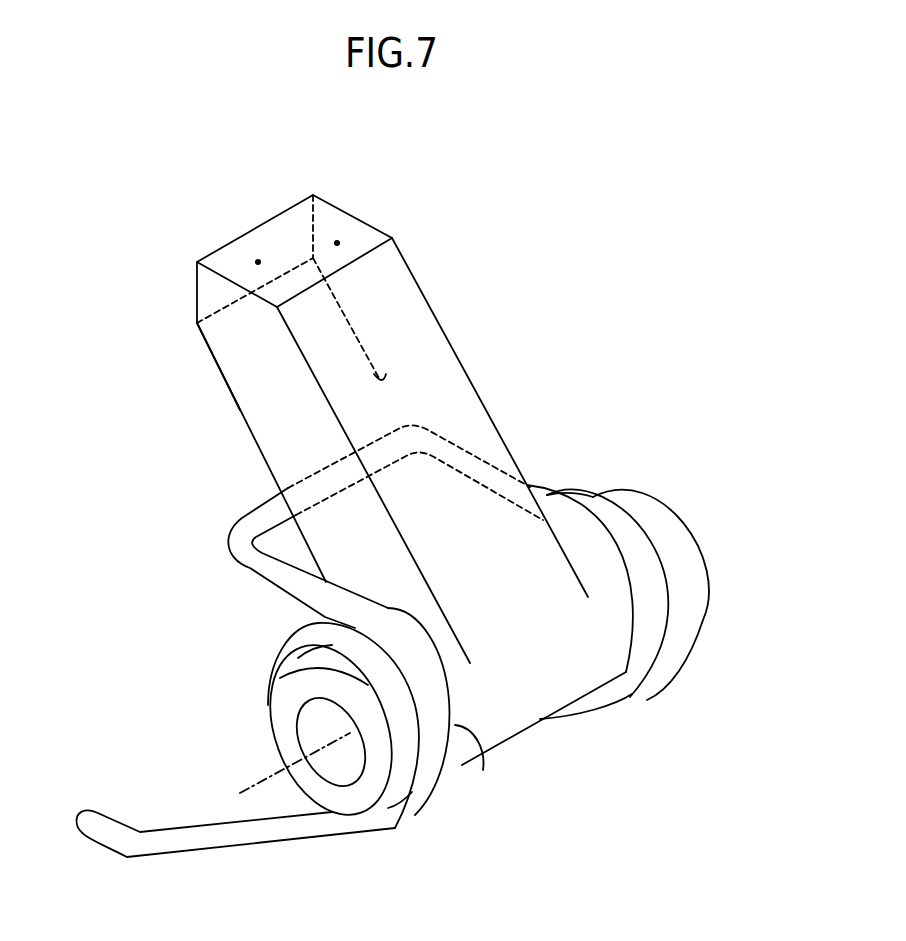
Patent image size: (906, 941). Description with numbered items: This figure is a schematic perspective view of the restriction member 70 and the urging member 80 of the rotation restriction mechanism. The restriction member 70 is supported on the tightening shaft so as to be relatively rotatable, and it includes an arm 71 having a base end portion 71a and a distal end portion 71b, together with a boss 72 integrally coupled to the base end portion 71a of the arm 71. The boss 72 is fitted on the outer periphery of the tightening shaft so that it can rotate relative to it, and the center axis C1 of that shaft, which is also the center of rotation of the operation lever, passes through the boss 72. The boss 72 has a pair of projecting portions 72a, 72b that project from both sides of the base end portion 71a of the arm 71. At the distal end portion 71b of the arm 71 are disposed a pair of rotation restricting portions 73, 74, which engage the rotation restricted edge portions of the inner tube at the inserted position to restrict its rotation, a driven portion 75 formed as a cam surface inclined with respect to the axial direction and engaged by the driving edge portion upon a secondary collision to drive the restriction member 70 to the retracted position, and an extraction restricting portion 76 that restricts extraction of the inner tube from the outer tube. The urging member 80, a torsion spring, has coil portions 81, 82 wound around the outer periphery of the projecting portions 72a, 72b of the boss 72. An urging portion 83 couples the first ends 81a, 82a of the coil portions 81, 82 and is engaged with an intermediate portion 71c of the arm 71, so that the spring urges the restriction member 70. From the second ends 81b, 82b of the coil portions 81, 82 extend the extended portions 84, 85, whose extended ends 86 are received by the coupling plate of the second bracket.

The restriction member 70 is at (431, 209).
The arm 71 is at (476, 385).
The base end portion 71a is at (500, 613).
The distal end portion 71b is at (387, 263).
The intermediate portion 71c is at (262, 565).
The boss 72 is at (507, 707).
The projecting portion 72a is at (270, 688).
The projecting portion 72b is at (634, 500).
The rotation restricting portion 73 is at (237, 330).
The rotation restricting portion 74 is at (337, 243).
The driven portion 75 is at (423, 333).
The extraction restricting portion 76 is at (258, 262).
The urging member 80 is at (665, 556).
The coil portion 81 is at (483, 770).
The first end 81a is at (393, 633).
The second end 81b is at (397, 826).
The coil portion 82 is at (668, 620).
The first end 82a is at (557, 510).
The second end 82b is at (623, 697).
The urging portion 83 is at (325, 465).
The extended portion 84 is at (233, 840).
The extended portion 85 is at (577, 712).
The extended end 86 is at (92, 830).
The center axis C1 is at (250, 783).